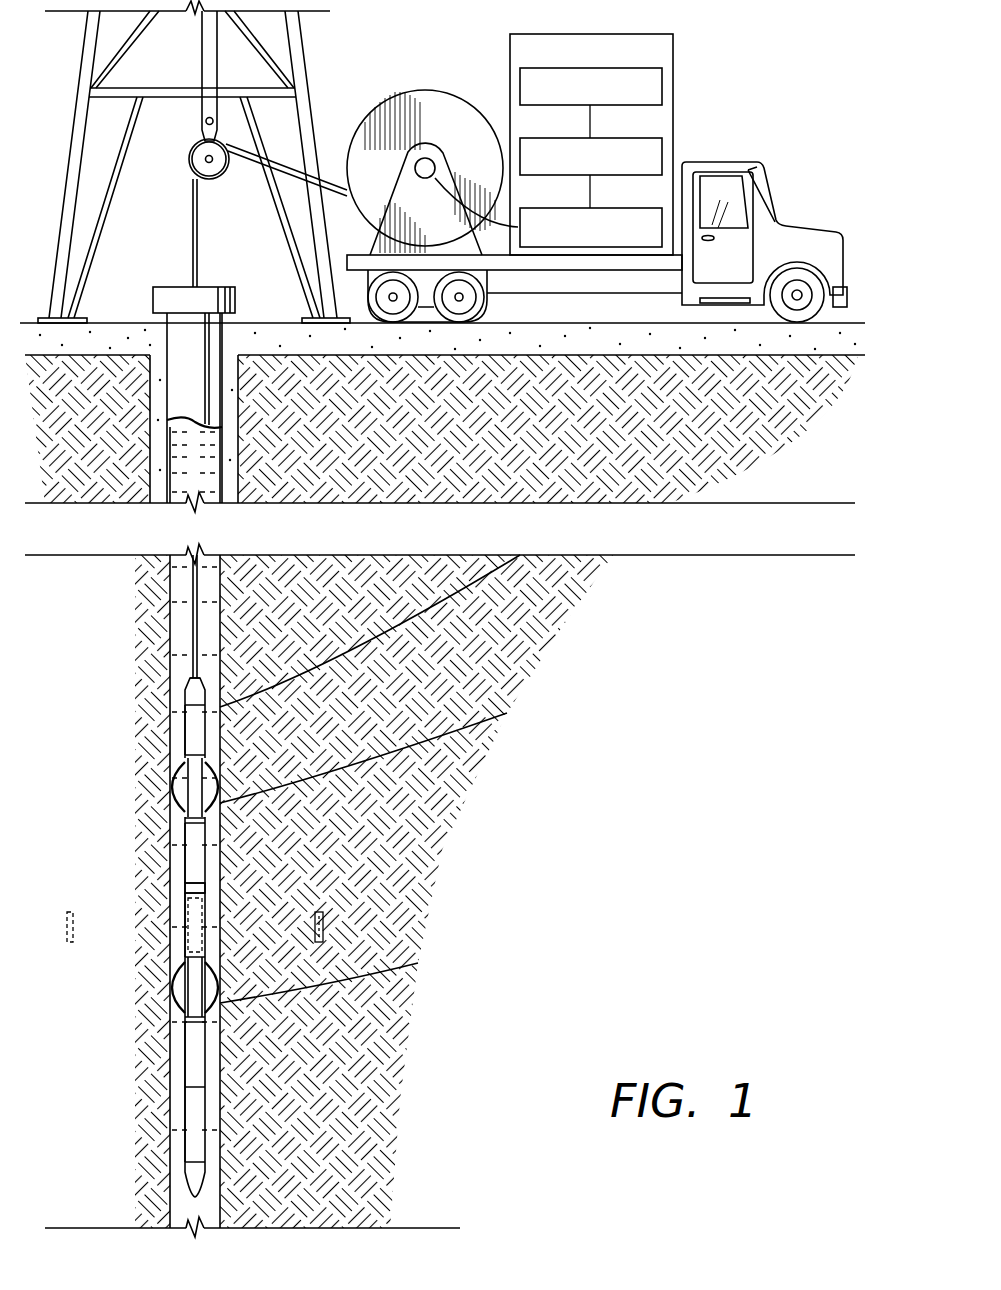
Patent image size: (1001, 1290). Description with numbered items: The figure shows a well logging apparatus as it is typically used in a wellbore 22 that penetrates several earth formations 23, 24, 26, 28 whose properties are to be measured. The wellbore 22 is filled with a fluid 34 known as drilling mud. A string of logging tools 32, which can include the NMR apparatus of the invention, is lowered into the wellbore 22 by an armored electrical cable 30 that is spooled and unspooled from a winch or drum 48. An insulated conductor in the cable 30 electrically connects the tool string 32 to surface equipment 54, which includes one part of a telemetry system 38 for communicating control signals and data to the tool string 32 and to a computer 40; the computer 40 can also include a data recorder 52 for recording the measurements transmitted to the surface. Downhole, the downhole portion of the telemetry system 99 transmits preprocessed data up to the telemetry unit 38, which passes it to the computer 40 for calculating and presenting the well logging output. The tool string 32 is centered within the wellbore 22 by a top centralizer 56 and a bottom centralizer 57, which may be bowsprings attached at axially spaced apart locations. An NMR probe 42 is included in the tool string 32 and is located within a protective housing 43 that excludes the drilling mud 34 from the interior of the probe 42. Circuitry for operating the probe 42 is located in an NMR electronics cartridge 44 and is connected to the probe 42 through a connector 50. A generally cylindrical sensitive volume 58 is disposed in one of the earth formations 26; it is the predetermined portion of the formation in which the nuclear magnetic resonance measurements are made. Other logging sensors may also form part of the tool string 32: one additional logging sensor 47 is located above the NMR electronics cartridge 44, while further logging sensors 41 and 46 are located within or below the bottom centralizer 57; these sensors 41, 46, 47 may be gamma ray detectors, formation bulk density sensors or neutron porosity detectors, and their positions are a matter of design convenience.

The wellbore 22 is at (185, 1165).
The earth formation 23 is at (329, 615).
The earth formation 24 is at (329, 733).
The earth formation 26 is at (329, 860).
The earth formation 28 is at (331, 1090).
The armored electrical cable 30 is at (192, 642).
The string of logging tools 32 is at (68, 1157).
The fluid 34 is at (182, 595).
The telemetry system 38 is at (607, 208).
The computer 40 is at (607, 138).
The logging sensor 41 is at (185, 1053).
The NMR probe 42 is at (185, 943).
The protective housing 43 is at (185, 918).
The NMR electronics cartridge 44 is at (185, 862).
The logging sensor 46 is at (185, 1113).
The logging sensor 47 is at (168, 725).
The winch or drum 48 is at (428, 88).
The connector 50 is at (185, 892).
The data recorder 52 is at (607, 68).
The surface equipment 54 is at (607, 34).
The top centralizer 56 is at (170, 810).
The bottom centralizer 57 is at (170, 1007).
The sensitive volume 58 is at (70, 942).
The downhole portion of the telemetry system 99 is at (185, 692).